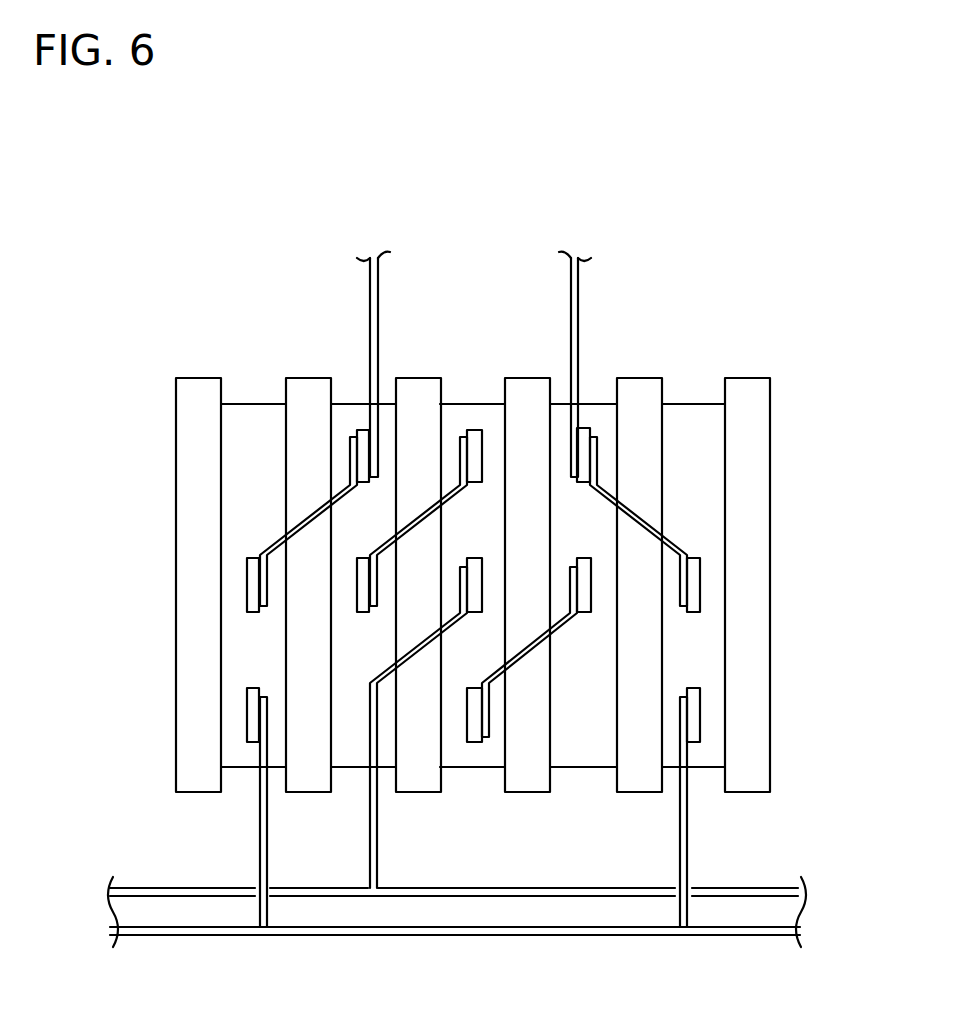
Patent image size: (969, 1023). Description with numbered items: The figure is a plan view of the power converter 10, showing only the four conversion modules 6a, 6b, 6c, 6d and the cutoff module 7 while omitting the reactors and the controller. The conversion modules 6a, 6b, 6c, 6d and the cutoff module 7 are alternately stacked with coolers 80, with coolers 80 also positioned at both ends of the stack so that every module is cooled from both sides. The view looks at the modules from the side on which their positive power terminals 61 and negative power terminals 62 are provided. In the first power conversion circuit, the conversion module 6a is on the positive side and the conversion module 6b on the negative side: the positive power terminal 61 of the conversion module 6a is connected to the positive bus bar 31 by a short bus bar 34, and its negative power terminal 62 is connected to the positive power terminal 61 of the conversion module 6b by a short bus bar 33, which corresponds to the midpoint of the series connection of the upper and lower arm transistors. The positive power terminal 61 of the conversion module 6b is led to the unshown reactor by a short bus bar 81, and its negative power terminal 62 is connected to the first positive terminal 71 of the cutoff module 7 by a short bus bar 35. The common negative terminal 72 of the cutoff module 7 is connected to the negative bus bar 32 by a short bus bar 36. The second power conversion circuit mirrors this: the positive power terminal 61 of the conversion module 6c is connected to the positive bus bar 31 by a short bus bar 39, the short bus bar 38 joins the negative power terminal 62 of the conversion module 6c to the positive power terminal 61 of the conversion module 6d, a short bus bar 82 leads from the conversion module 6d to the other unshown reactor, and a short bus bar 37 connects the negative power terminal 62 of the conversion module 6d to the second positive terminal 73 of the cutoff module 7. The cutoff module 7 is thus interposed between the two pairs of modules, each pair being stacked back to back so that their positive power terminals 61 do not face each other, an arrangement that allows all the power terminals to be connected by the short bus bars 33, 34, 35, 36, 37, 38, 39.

The power converter 10 is at (453, 478).
The cooler 80 is at (300, 390).
The short bus bar 81 is at (372, 277).
The short bus bar 82 is at (577, 277).
The positive power terminal 61 is at (365, 428).
The negative power terminal 62 is at (252, 587).
The first positive terminal 71 is at (475, 433).
The common negative terminal 72 is at (470, 560).
The second positive terminal 73 is at (473, 713).
The cutoff module 7 is at (485, 580).
The conversion module 6a is at (237, 475).
The conversion module 6b is at (352, 758).
The conversion module 6c is at (710, 475).
The conversion module 6d is at (582, 758).
The short bus bar 33 is at (278, 546).
The short bus bar 35 is at (462, 433).
The short bus bar 36 is at (373, 832).
The short bus bar 37 is at (528, 658).
The short bus bar 38 is at (667, 533).
The short bus bar 34 is at (263, 832).
The short bus bar 39 is at (685, 832).
The positive bus bar 31 is at (155, 935).
The negative bus bar 32 is at (145, 888).